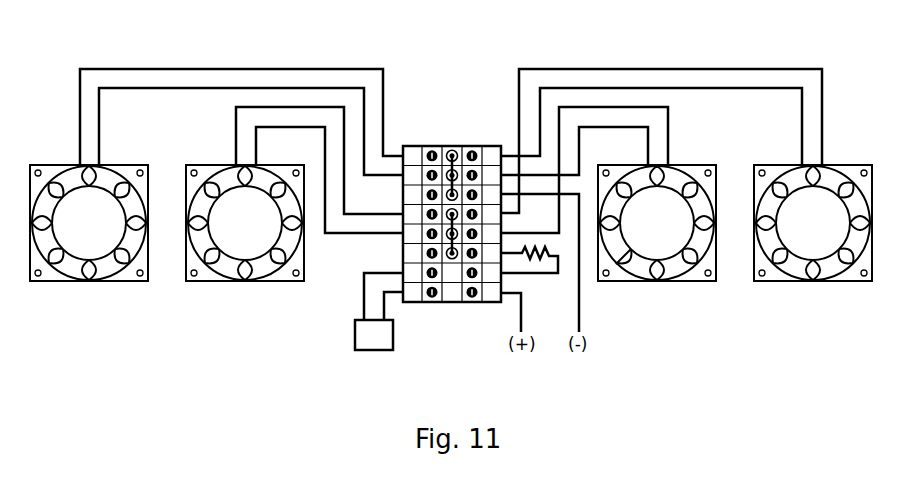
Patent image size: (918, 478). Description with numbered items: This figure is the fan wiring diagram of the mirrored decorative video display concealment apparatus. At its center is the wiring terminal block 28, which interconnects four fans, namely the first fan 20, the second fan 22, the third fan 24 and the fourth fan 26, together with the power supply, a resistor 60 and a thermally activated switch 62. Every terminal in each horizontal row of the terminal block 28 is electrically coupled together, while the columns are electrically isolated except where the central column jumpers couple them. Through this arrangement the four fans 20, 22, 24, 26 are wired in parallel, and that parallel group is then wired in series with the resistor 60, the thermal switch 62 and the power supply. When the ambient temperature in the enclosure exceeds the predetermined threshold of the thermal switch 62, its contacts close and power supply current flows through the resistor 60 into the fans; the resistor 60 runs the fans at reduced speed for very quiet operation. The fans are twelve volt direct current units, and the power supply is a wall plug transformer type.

The Fan #1 20 is at (63, 282).
The Fan #2 22 is at (213, 282).
The Fan #3 24 is at (667, 282).
The Fan #4 26 is at (838, 282).
The wiring terminal block 28 is at (449, 146).
The resistor 60 is at (550, 260).
The thermally activated switch 62 is at (355, 344).